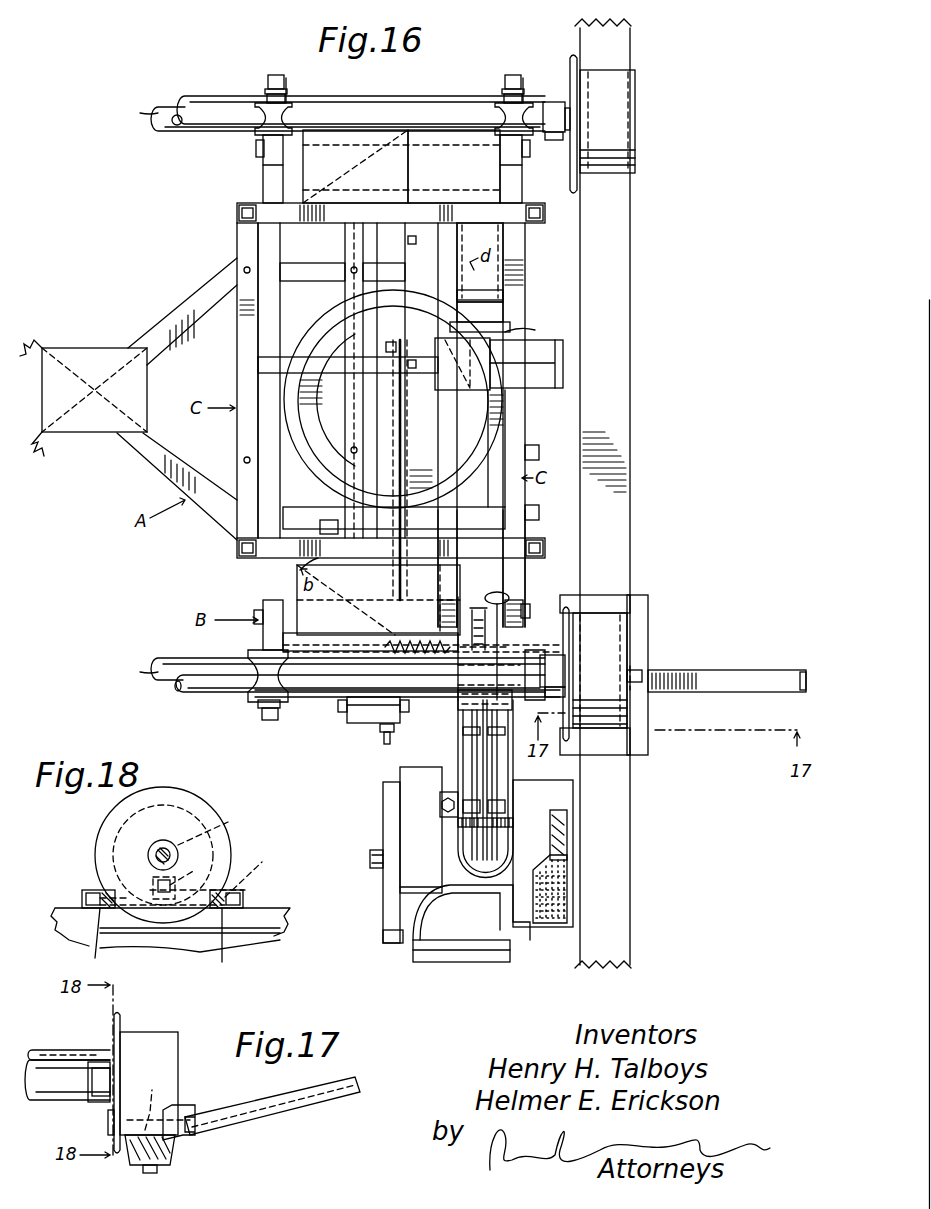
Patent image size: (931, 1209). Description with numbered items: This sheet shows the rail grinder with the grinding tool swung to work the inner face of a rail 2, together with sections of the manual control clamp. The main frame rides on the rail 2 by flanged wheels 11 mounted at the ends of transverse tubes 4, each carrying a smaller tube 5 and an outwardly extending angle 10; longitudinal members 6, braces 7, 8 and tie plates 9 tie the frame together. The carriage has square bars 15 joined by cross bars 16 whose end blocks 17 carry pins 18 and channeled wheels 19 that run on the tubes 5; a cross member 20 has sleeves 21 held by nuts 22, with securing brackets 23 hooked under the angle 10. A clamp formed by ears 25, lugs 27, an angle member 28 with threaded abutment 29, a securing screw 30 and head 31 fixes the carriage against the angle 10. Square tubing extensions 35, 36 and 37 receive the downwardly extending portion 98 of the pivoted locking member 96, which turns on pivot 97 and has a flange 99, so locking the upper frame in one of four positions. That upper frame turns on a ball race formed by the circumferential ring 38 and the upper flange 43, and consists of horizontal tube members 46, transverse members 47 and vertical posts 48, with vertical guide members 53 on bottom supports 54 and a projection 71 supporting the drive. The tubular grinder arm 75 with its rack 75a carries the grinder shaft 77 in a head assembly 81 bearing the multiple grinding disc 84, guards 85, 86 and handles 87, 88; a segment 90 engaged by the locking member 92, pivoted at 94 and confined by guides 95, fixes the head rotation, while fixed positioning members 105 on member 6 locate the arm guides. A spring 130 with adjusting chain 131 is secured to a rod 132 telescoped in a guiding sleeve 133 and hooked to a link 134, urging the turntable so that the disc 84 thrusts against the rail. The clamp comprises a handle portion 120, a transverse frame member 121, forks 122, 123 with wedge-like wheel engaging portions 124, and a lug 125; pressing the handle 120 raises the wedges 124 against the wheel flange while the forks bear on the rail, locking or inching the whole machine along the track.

In FIG. 16, the rail 2 is at (630, 240).
In FIG. 18, the rail 2 is at (70, 915).
In FIG. 16, the transversely extending tube 4 is at (140, 118).
In FIG. 17, the transversely extending tube 4 is at (45, 1100).
In FIG. 16, the smaller tube 5 is at (185, 125).
In FIG. 17, the smaller tube 5 is at (42, 1060).
In FIG. 16, the longitudinally extending member 6 is at (390, 238).
In FIG. 16, the transversely extending brace 7 is at (180, 318).
In FIG. 16, the transversely extending brace 8 is at (160, 460).
In FIG. 16, the tie plate 9 is at (378, 190).
In FIG. 16, the angle 10 is at (195, 96).
In FIG. 17, the angle 10 is at (60, 1060).
In FIG. 16, the rail engaging flanged wheel 11 is at (620, 104).
In FIG. 18, the rail engaging flanged wheel 11 is at (98, 832).
In FIG. 17, the rail engaging flanged wheel 11 is at (160, 1045).
In FIG. 16, the square bar 15 is at (522, 187).
In FIG. 16, the cross bar 16 is at (445, 158).
In FIG. 16, the block 17 is at (283, 160).
In FIG. 16, the pin 18 is at (275, 75).
In FIG. 16, the channeled wheel 19 is at (262, 118).
In FIG. 16, the cross member 20 is at (370, 98).
In FIG. 16, the sleeve 21 is at (288, 92).
In FIG. 16, the securing nut 22 is at (268, 88).
In FIG. 16, the securing bracket 23 is at (267, 96).
In FIG. 16, the ear 25 is at (350, 720).
In FIG. 16, the lug 27 is at (355, 722).
In FIG. 16, the angle member 28 is at (365, 722).
In FIG. 16, the screw threaded abutment member 29 is at (380, 726).
In FIG. 16, the securing screw 30 is at (384, 735).
In FIG. 16, the manipulating head 31 is at (388, 745).
In FIG. 16, the square tubing extension 35 is at (545, 516).
In FIG. 16, the square tubing extension 36 is at (539, 452).
In FIG. 16, the square tubing extension 37 is at (460, 258).
In FIG. 16, the circumferential ring 38 is at (335, 308).
In FIG. 16, the upper flange 43 is at (330, 330).
In FIG. 16, the horizontal square tube member 46 is at (445, 223).
In FIG. 16, the transverse member 47 is at (268, 212).
In FIG. 16, the vertical post 48 is at (239, 213).
In FIG. 16, the vertical guide member 53 is at (442, 604).
In FIG. 16, the bottom support 54 is at (445, 575).
In FIG. 16, the projection 71 is at (545, 388).
In FIG. 16, the grinder arm 75 is at (462, 704).
In FIG. 16, the rack 75a is at (497, 592).
In FIG. 16, the grinder shaft 77 is at (370, 860).
In FIG. 16, the head assembly 81 is at (488, 888).
In FIG. 16, the multiple grinding disc 84 is at (552, 923).
In FIG. 16, the guard 85 is at (565, 796).
In FIG. 16, the guard 86 is at (383, 818).
In FIG. 16, the handle 87 is at (466, 962).
In FIG. 16, the handle 88 is at (567, 838).
In FIG. 16, the segment 90 is at (513, 824).
In FIG. 16, the locking member 92 is at (470, 752).
In FIG. 16, the pivot 94 is at (463, 730).
In FIG. 16, the lateral guide 95 is at (497, 790).
In FIG. 16, the pivoted locking member 96 is at (490, 310).
In FIG. 16, the pivot 97 is at (503, 290).
In FIG. 16, the downwardly extending portion 98 is at (500, 327).
In FIG. 16, the flange 99 is at (540, 332).
In FIG. 16, the fixed positioning member 105 is at (416, 242).
In FIG. 16, the handle portion 120 is at (750, 668).
In FIG. 18, the handle portion 120 is at (206, 841).
In FIG. 17, the handle portion 120 is at (272, 1108).
In FIG. 16, the transverse frame member 121 is at (648, 632).
In FIG. 18, the transverse frame member 121 is at (188, 875).
In FIG. 16, the fork 122 is at (610, 750).
In FIG. 18, the fork 122 is at (243, 894).
In FIG. 16, the fork 123 is at (610, 600).
In FIG. 18, the fork 123 is at (82, 894).
In FIG. 17, the fork 123 is at (158, 1103).
In FIG. 16, the wedge-like wheel engaging portion 124 is at (580, 608).
In FIG. 18, the wedge-like wheel engaging portion 124 is at (172, 943).
In FIG. 17, the wedge-like wheel engaging portion 124 is at (108, 1120).
In FIG. 16, the lug 125 is at (645, 668).
In FIG. 18, the lug 125 is at (185, 877).
In FIG. 17, the lug 125 is at (182, 1105).
In FIG. 16, the spring 130 is at (428, 645).
In FIG. 16, the adjusting chain 131 is at (487, 672).
In FIG. 16, the rod 132 is at (395, 588).
In FIG. 16, the guiding sleeve 133 is at (402, 440).
In FIG. 16, the link 134 is at (256, 150).